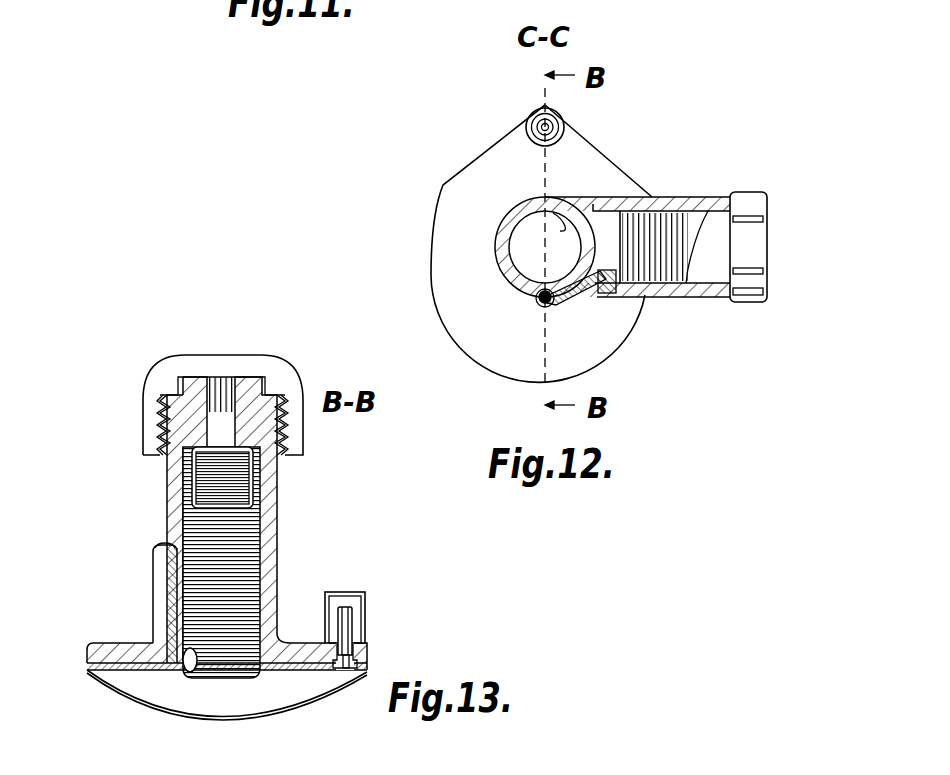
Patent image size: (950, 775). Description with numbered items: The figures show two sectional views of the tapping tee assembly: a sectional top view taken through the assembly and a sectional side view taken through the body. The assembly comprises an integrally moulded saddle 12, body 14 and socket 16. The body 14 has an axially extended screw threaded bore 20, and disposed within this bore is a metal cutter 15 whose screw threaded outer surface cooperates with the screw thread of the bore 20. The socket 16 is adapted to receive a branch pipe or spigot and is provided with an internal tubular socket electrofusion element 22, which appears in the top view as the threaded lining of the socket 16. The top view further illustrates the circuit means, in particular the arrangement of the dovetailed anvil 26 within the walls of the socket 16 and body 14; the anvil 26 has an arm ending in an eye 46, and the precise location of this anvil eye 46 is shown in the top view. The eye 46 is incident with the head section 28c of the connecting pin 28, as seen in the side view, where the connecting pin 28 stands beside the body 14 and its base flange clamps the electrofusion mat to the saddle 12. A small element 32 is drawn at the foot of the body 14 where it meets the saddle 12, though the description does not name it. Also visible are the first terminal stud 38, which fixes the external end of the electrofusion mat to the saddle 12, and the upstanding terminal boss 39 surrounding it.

In FIG. 12, the saddle 12 is at (487, 163).
In FIG. 13, the saddle 12 is at (270, 697).
In FIG. 12, the body 14 is at (510, 223).
In FIG. 13, the body 14 is at (277, 483).
In FIG. 13, the metal cutter 15 is at (202, 482).
In FIG. 12, the socket 16 is at (717, 296).
In FIG. 12, the screw threaded bore 20 is at (548, 243).
In FIG. 13, the screw threaded bore 20 is at (190, 512).
In FIG. 12, the socket electrofusion element 22 is at (692, 240).
In FIG. 12, the dovetailed anvil 26 is at (578, 293).
In FIG. 13, the connecting pin 28 is at (167, 597).
In FIG. 13, the head section 28c is at (163, 540).
In FIG. 13, the seal ring 32 is at (183, 663).
In FIG. 12, the first terminal stud 38 is at (548, 127).
In FIG. 13, the first terminal stud 38 is at (345, 615).
In FIG. 12, the upstanding terminal boss 39 is at (536, 110).
In FIG. 13, the upstanding terminal boss 39 is at (327, 607).
In FIG. 12, the eye 46 is at (530, 293).
In FIG. 13, the eye 46 is at (160, 544).